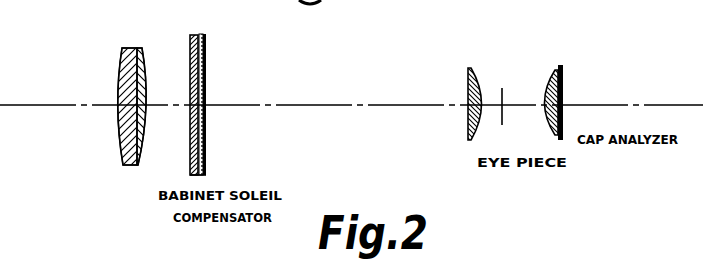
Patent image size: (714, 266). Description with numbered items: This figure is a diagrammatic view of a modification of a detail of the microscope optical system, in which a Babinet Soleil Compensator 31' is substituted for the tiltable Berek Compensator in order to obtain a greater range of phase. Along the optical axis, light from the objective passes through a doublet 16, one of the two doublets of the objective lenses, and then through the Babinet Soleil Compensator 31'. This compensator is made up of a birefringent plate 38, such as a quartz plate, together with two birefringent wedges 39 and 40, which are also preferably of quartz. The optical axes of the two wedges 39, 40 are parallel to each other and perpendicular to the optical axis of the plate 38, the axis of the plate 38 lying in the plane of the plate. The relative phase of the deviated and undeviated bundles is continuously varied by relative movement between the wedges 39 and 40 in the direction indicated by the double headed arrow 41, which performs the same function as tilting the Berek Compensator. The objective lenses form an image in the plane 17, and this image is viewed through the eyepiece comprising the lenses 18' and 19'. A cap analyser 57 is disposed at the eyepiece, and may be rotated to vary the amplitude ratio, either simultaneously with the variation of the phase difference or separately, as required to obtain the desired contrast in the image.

The doublet 16 is at (126, 48).
The birefringent plate 38 is at (190, 44).
The birefringent wedge 40 is at (203, 34).
The birefringent wedge 39 is at (205, 175).
The double headed arrow 41 is at (218, 33).
The Babinet Soleil Compensator 31' is at (238, 148).
The eyepiece lens 18' is at (479, 87).
The image plane 17 is at (502, 88).
The eyepiece lens 19' is at (543, 85).
The cap analyser 57 is at (562, 66).